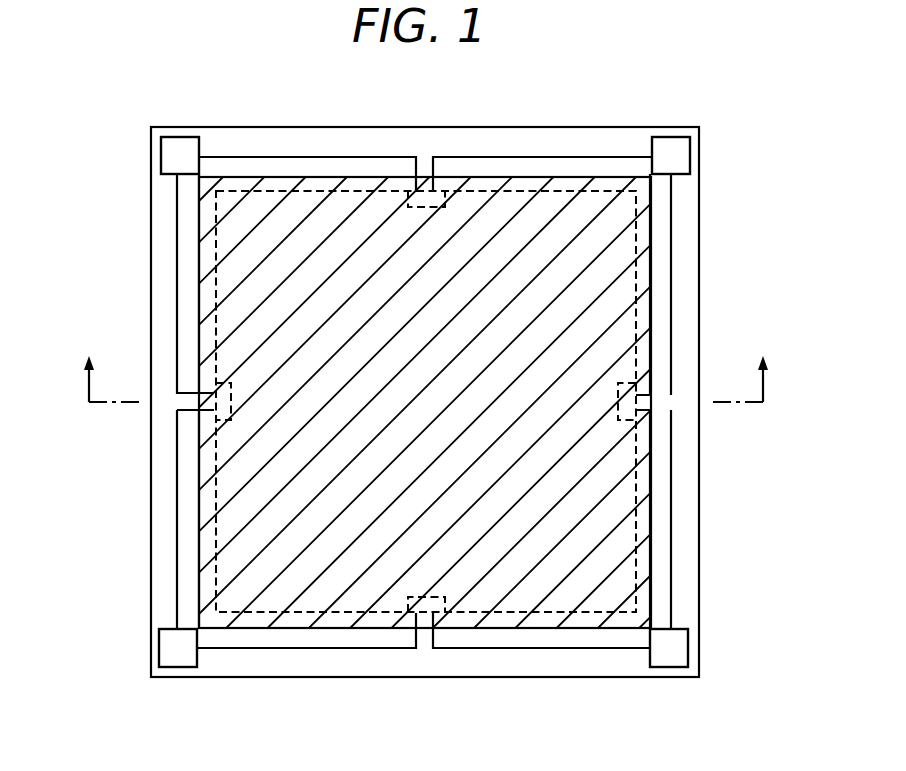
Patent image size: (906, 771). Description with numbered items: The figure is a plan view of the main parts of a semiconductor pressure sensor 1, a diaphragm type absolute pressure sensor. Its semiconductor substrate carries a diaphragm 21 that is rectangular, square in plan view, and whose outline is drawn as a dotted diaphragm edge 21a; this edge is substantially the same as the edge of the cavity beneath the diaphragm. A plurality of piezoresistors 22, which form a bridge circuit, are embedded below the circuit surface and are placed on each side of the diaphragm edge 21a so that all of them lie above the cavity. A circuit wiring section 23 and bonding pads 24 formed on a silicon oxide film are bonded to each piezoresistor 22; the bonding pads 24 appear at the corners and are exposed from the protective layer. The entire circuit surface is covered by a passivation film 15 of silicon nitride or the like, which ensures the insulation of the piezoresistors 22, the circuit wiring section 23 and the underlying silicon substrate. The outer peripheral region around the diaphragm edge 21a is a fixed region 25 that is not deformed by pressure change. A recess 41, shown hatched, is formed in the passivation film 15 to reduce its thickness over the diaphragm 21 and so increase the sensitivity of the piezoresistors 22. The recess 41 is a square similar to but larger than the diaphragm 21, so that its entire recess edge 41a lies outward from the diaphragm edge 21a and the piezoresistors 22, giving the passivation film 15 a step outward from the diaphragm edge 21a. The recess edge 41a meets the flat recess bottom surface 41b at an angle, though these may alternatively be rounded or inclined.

The semiconductor pressure sensor 1 is at (50, 213).
The passivation film 15 is at (518, 147).
The diaphragm 21 is at (622, 290).
The diaphragm edge 21a is at (636, 225).
The piezoresistor 22 is at (429, 197).
The circuit wiring section 23 is at (178, 270).
The bonding pad 24 is at (177, 157).
The fixed region 25 is at (362, 665).
The recess 41 is at (506, 402).
The recess edge 41a is at (603, 613).
The recess bottom surface 41b is at (522, 464).